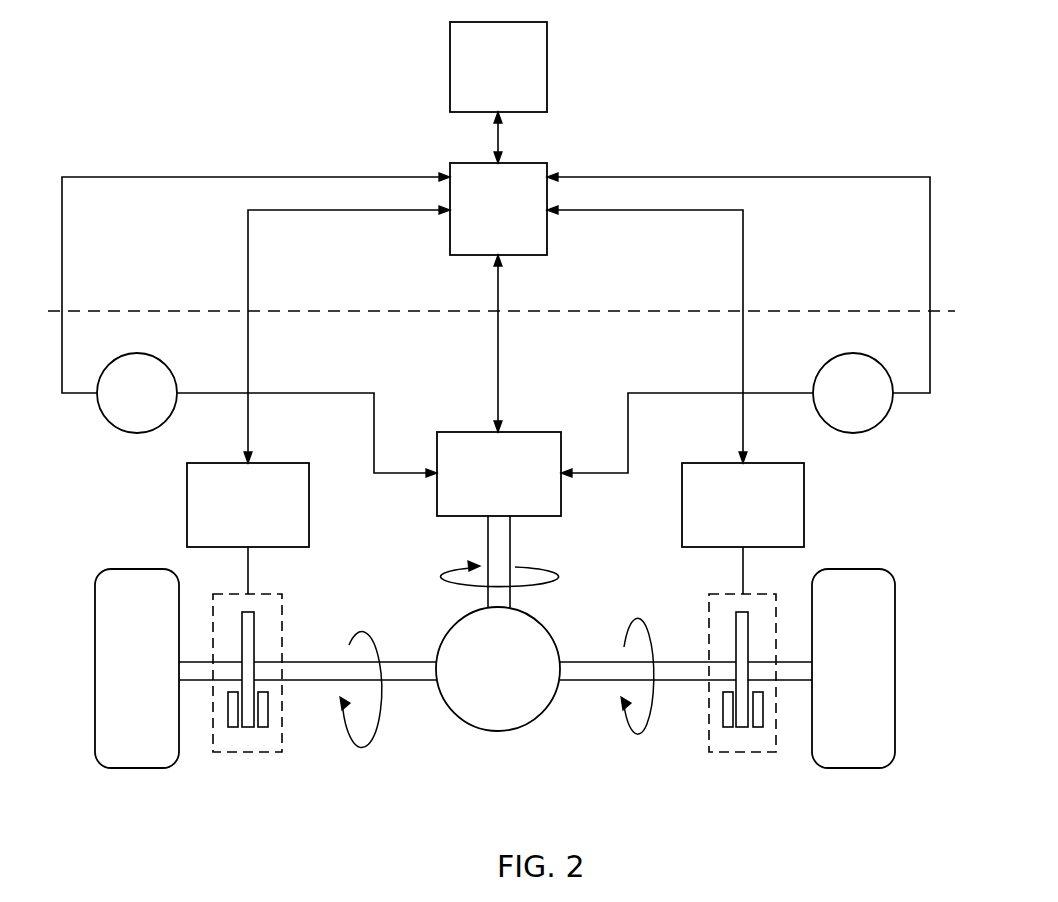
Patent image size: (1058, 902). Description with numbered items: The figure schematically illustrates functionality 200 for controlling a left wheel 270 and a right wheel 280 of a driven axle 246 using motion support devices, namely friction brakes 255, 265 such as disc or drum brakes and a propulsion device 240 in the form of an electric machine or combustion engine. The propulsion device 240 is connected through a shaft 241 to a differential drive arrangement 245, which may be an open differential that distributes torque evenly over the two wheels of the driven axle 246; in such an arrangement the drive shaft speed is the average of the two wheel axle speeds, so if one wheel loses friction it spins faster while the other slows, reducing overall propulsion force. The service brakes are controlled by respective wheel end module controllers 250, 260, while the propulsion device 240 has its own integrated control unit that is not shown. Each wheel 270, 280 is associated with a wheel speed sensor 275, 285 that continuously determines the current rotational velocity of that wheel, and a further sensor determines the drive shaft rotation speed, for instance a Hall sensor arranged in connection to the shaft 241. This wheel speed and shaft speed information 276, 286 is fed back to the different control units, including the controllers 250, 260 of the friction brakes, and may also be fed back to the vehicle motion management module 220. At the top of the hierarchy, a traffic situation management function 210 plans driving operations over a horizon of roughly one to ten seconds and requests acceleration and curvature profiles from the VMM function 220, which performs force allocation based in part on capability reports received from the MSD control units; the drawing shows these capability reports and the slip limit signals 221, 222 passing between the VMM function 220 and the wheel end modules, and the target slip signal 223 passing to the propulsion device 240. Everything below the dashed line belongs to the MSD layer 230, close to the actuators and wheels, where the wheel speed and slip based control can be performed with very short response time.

The functionality 200 is at (128, 59).
The traffic situation management function 210 is at (498, 92).
The vehicle motion management function 220 is at (504, 233).
The wheel slip limit signal to WEM SB1 221 is at (322, 334).
The wheel slip limit signal to WEM SB2 222 is at (647, 334).
The torque/slip request signal to EM/CE 223 is at (501, 343).
The MSD layer 230 is at (501, 326).
The propulsion device 240 is at (499, 474).
The shaft 241 is at (502, 547).
The differential drive arrangement 245 is at (498, 669).
The driven axle 246 is at (327, 670).
The wheel end module controller 250 is at (248, 528).
The friction brake 255 is at (266, 752).
The wheel end module controller 260 is at (743, 528).
The friction brake 265 is at (720, 752).
The left wheel 270 is at (131, 569).
The wheel speed sensor 275 is at (137, 393).
The wheel speed and shaft speed information 276 is at (256, 312).
The right wheel 280 is at (853, 569).
The wheel speed sensor 285 is at (853, 393).
The wheel speed and shaft speed information 286 is at (738, 312).